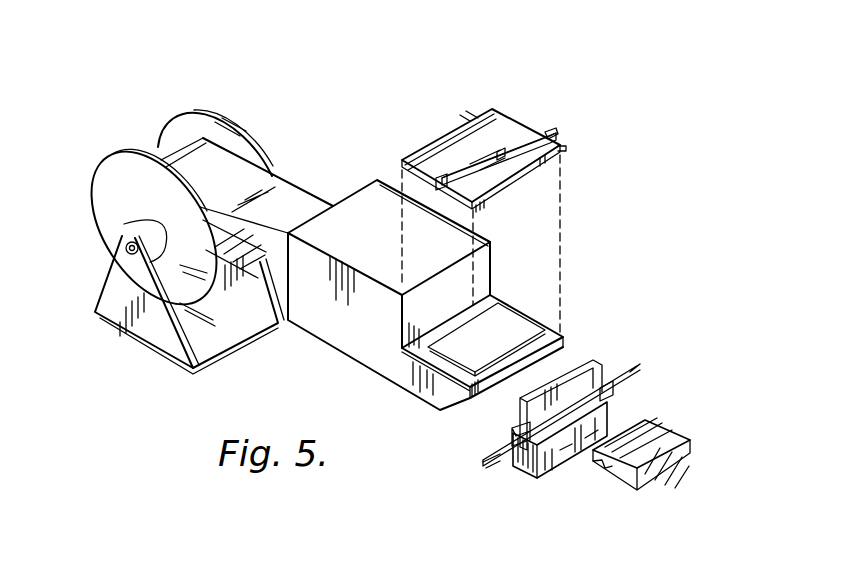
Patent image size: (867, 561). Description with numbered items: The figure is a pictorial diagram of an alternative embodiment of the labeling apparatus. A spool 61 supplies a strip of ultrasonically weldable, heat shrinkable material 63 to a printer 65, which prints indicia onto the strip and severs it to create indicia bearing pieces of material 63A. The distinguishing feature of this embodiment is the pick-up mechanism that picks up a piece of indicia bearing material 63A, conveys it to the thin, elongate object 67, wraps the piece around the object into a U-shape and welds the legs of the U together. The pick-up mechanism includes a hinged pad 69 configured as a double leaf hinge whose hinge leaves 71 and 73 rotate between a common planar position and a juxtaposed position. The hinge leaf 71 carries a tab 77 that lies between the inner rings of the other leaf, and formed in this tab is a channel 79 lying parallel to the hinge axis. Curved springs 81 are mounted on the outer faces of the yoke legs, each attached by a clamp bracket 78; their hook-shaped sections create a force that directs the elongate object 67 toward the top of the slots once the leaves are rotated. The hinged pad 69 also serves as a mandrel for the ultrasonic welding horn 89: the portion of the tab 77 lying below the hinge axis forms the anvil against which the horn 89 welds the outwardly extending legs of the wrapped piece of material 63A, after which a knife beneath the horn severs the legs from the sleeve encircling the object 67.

The spool 61 is at (236, 118).
The strip of ultrasonically weldable, heat shrinkable material 63 is at (290, 200).
The piece of indicia bearing material 63A is at (520, 336).
The printer 65 is at (323, 340).
The thin, elongate object 67 is at (497, 450).
The hinged pad 69 is at (467, 130).
The hinge leaf 71 is at (494, 110).
The hinge leaf 73 is at (566, 150).
The tab 77 is at (497, 152).
The clamp bracket 78 is at (560, 452).
The channel 79 is at (508, 165).
The curved spring 81 is at (450, 178).
The ultrasonic welding horn 89 is at (676, 437).